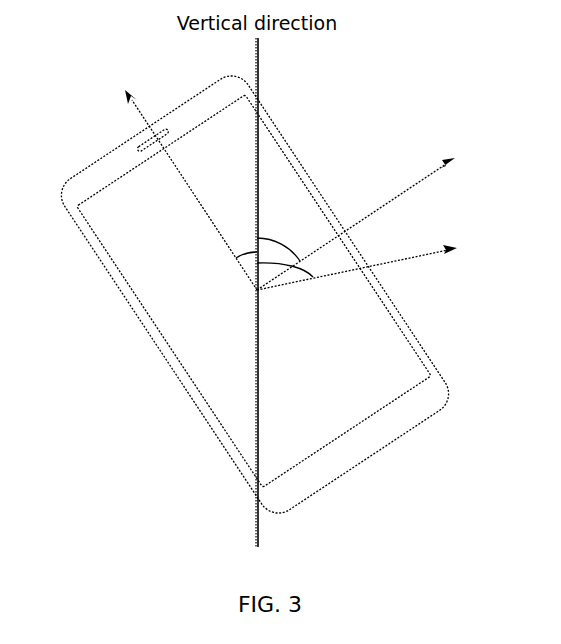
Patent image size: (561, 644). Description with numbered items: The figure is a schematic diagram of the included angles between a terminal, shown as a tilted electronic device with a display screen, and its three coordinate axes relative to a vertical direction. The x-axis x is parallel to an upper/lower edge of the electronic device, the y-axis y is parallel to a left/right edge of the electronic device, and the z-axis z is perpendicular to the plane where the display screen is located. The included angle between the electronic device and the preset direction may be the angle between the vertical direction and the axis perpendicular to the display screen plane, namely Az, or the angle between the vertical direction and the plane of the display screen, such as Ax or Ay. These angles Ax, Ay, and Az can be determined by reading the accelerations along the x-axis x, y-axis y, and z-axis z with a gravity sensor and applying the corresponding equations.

The x-axis x is at (360, 212).
The y-axis y is at (191, 180).
The z-axis z is at (361, 258).
The included angle Ax is at (279, 239).
The included angle Ay is at (241, 240).
The included angle Az is at (296, 265).